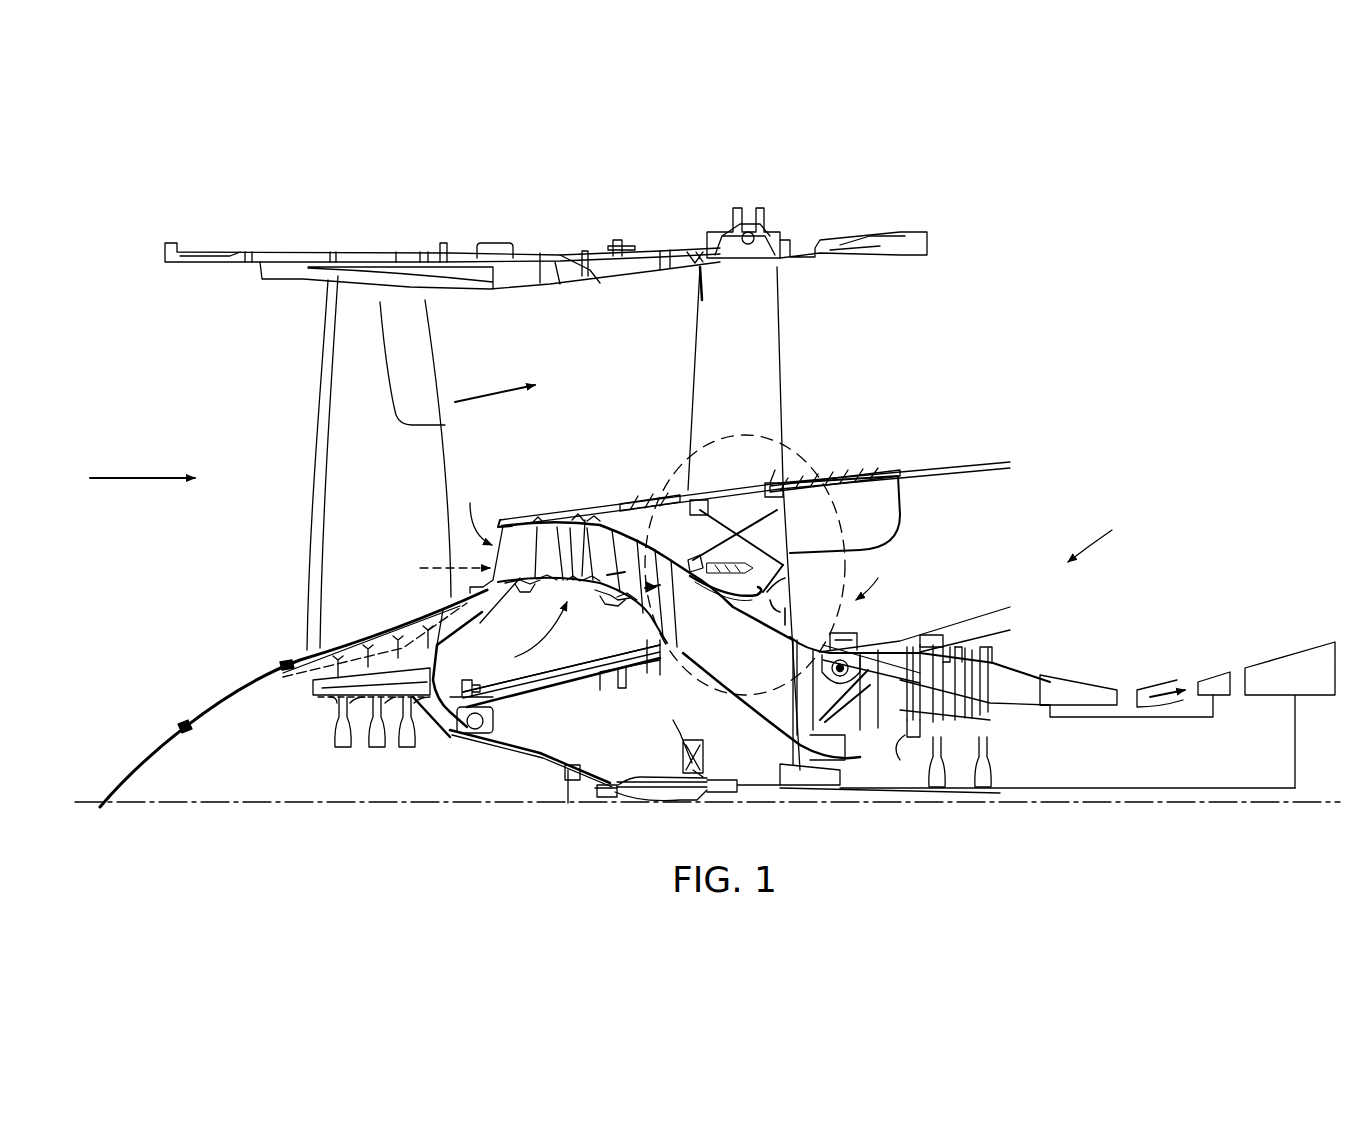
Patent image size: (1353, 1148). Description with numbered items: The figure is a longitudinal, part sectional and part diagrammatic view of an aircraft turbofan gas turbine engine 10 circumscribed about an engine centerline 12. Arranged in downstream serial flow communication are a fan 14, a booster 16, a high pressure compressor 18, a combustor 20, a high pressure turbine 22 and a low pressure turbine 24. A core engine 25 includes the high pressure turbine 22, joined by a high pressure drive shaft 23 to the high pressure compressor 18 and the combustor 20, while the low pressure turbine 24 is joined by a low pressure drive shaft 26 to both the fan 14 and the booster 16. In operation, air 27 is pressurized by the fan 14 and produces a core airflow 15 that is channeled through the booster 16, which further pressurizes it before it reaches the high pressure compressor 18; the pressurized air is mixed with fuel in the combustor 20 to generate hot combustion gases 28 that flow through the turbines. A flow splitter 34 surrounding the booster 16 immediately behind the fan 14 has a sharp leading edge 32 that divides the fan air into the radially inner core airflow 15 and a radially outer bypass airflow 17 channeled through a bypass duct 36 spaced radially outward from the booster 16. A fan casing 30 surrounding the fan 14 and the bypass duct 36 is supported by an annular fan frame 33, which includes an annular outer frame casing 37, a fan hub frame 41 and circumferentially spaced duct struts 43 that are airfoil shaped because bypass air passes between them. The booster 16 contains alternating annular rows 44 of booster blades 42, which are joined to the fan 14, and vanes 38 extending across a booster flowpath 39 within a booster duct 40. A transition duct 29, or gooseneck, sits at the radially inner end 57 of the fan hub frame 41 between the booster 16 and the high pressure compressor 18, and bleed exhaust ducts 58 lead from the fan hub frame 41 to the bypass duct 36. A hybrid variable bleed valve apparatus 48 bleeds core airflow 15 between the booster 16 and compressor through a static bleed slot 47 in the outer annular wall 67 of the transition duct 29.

The aircraft turbofan gas turbine engine 10 is at (158, 162).
The engine centerline 12 is at (1262, 805).
The fan 14 is at (379, 463).
The core airflow 15 is at (444, 566).
The booster 16 is at (525, 637).
The bypass airflow 17 is at (490, 392).
The high pressure compressor 18 is at (942, 622).
The combustor 20 is at (1140, 688).
The high pressure turbine 22 is at (1207, 672).
The high pressure drive shaft 23 is at (1132, 718).
The low pressure turbine 24 is at (1290, 715).
The core engine 25 is at (1105, 536).
The low pressure drive shaft 26 is at (1240, 788).
The air 27 is at (130, 490).
The hot combustion gases 28 is at (1152, 688).
The transition duct 29 is at (550, 692).
The fan casing 30 is at (446, 252).
The sharp leading edge 32 is at (500, 518).
The fan frame 33 is at (734, 472).
The flow splitter 34 is at (602, 498).
The bypass duct 36 is at (755, 441).
The annular outer frame casing 37 is at (803, 245).
The vanes 38 is at (550, 534).
The booster flowpath 39 is at (474, 511).
The booster duct 40 is at (575, 512).
The fan hub frame 41 is at (800, 583).
The booster blades 42 is at (540, 584).
The duct struts 43 is at (744, 518).
The annular rows 44 is at (607, 603).
The static bleed slot 47 is at (745, 603).
The hybrid variable bleed valve apparatus 48 is at (877, 574).
The radially inner end 57 is at (803, 630).
The bleed exhaust ducts 58 is at (843, 514).
The outer annular wall 67 is at (690, 700).